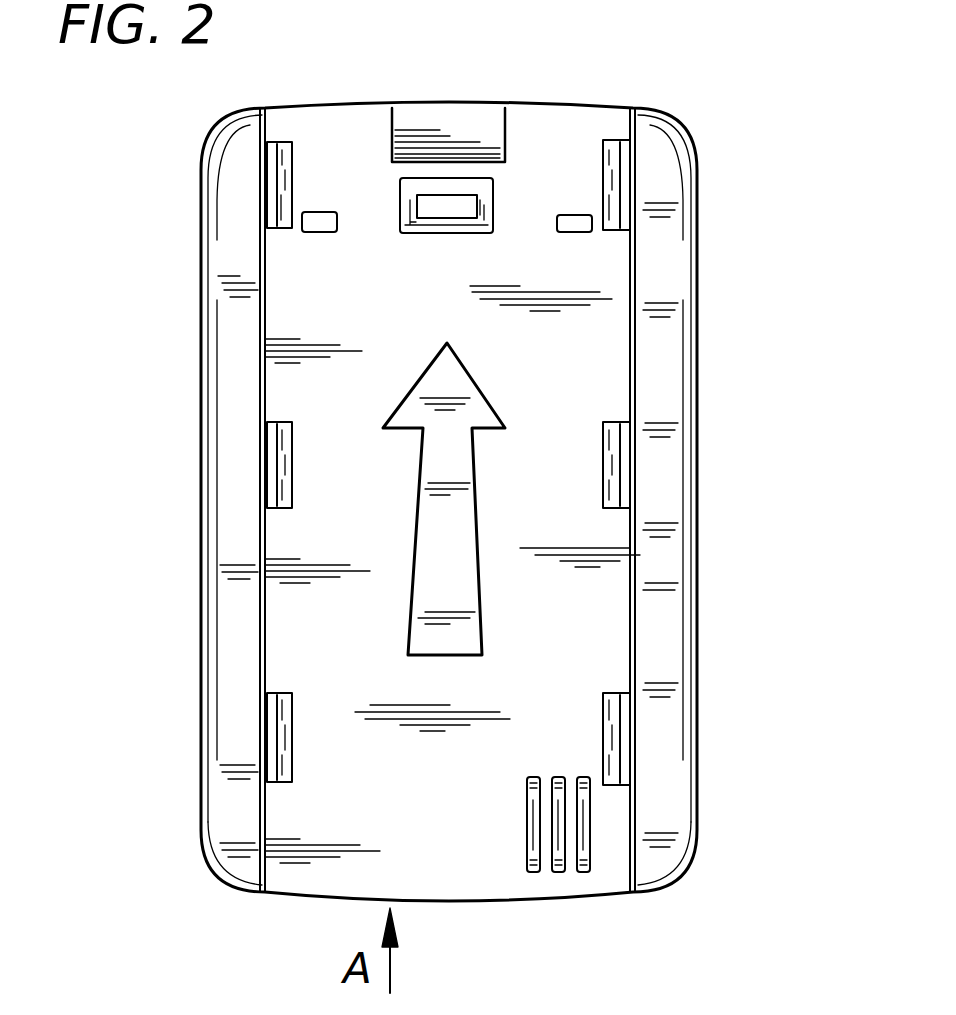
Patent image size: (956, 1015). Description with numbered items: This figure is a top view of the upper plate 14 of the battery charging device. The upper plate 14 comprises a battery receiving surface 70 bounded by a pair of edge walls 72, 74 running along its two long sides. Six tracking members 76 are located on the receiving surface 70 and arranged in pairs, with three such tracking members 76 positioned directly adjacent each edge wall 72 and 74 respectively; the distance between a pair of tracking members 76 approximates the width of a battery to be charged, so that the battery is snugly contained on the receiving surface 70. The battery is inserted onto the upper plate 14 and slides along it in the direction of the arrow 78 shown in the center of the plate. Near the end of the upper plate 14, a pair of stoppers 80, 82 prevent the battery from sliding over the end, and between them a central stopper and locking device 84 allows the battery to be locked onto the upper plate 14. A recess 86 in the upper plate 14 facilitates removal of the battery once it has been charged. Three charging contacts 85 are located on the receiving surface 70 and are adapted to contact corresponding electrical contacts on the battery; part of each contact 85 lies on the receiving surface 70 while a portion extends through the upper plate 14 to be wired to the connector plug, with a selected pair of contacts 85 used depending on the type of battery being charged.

The upper plate 14 is at (737, 259).
The battery receiving surface 70 is at (290, 627).
The edge wall 72 is at (235, 338).
The edge wall 74 is at (657, 363).
The tracking members 76 is at (265, 457).
The arrow 78 is at (417, 532).
The stopper 80 is at (319, 212).
The stopper 82 is at (578, 215).
The central stopper and locking device 84 is at (446, 190).
The charging contacts 85 is at (584, 872).
The recess 86 is at (486, 118).